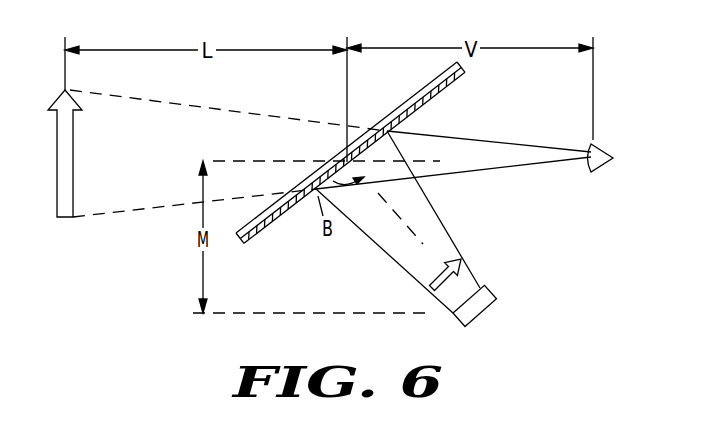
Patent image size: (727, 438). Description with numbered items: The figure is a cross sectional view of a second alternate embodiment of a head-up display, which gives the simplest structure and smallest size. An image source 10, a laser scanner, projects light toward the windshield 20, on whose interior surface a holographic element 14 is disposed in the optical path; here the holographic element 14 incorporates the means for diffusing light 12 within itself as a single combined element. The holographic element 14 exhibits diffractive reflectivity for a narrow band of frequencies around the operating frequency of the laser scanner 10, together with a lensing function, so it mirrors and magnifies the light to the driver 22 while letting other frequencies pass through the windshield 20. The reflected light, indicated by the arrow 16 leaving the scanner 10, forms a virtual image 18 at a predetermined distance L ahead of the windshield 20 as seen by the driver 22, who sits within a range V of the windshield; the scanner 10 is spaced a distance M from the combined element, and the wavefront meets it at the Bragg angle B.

The image source 10 is at (491, 292).
The means for diffusing light 12 is at (350, 152).
The holographic element 14 is at (420, 100).
The direction of light from source 16 is at (430, 284).
The virtual image 18 is at (57, 217).
The windshield 20 is at (430, 83).
The driver 22 is at (603, 148).